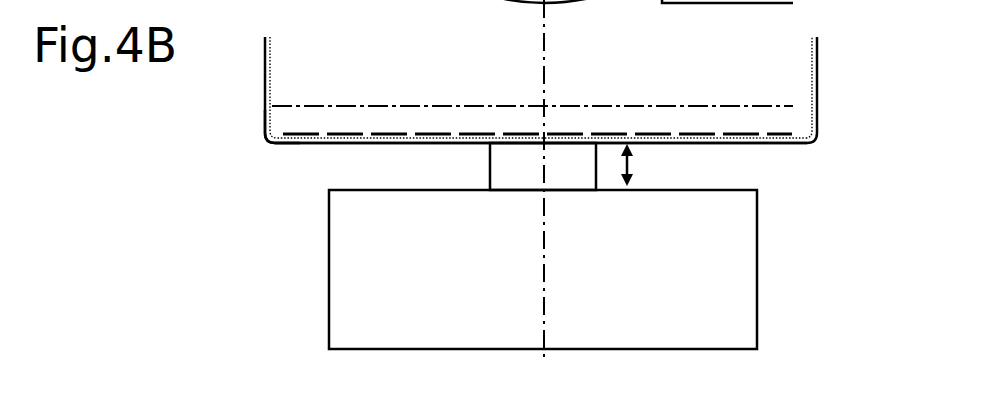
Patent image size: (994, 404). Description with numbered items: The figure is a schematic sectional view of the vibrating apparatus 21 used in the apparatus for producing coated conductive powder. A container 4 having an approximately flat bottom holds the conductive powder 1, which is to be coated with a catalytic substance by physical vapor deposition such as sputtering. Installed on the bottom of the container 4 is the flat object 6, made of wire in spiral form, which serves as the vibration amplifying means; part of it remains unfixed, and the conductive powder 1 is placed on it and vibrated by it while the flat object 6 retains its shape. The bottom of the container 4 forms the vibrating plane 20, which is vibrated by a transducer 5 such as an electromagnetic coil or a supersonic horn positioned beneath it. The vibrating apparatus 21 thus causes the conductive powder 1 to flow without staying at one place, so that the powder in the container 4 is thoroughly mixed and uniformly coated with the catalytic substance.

The conductive powder 1 is at (795, 107).
The container 4 is at (261, 127).
The transducer 5 is at (728, 228).
The flat object 6 is at (637, 133).
The vibrating plane 20 is at (780, 143).
The vibrating apparatus 21 is at (768, 272).